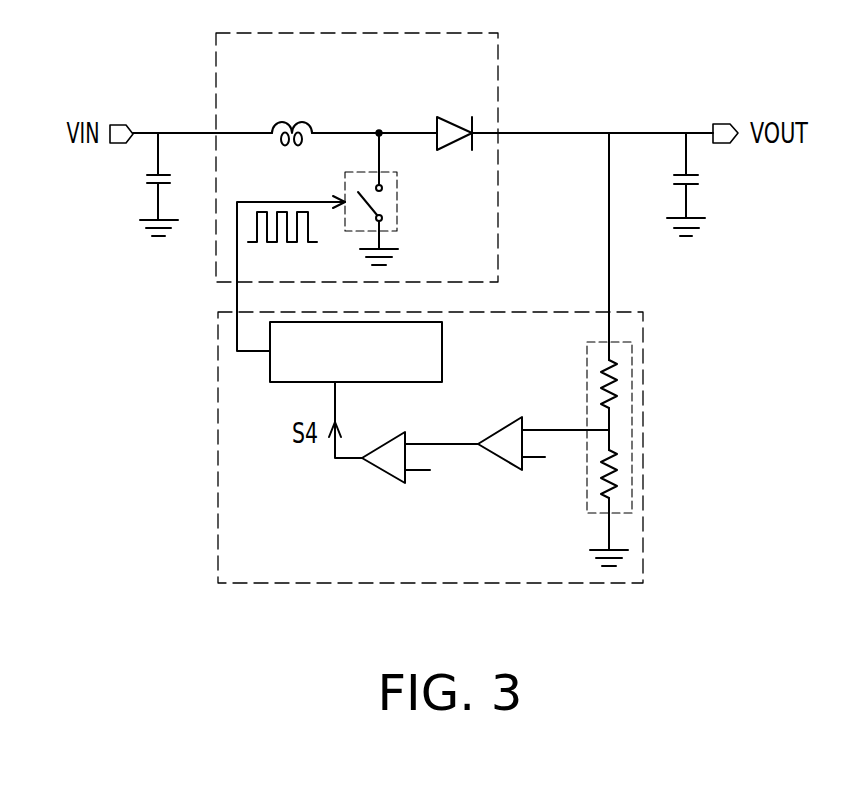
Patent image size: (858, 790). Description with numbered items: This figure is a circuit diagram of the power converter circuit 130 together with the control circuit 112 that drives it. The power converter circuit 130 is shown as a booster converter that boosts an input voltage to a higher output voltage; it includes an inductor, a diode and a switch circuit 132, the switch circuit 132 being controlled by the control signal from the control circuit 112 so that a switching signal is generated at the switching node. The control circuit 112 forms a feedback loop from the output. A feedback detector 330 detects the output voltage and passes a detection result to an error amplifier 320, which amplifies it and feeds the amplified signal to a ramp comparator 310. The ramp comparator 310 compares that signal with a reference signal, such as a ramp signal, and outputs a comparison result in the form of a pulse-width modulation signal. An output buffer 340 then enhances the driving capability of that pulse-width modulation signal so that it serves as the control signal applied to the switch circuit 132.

The power converter circuit 130 is at (498, 54).
The switch circuit 132 is at (397, 202).
The control circuit 112 is at (643, 443).
The output buffer 340 is at (442, 351).
The ramp comparator 310 is at (383, 471).
The error amplifier 320 is at (500, 463).
The feedback detector 330 is at (632, 345).